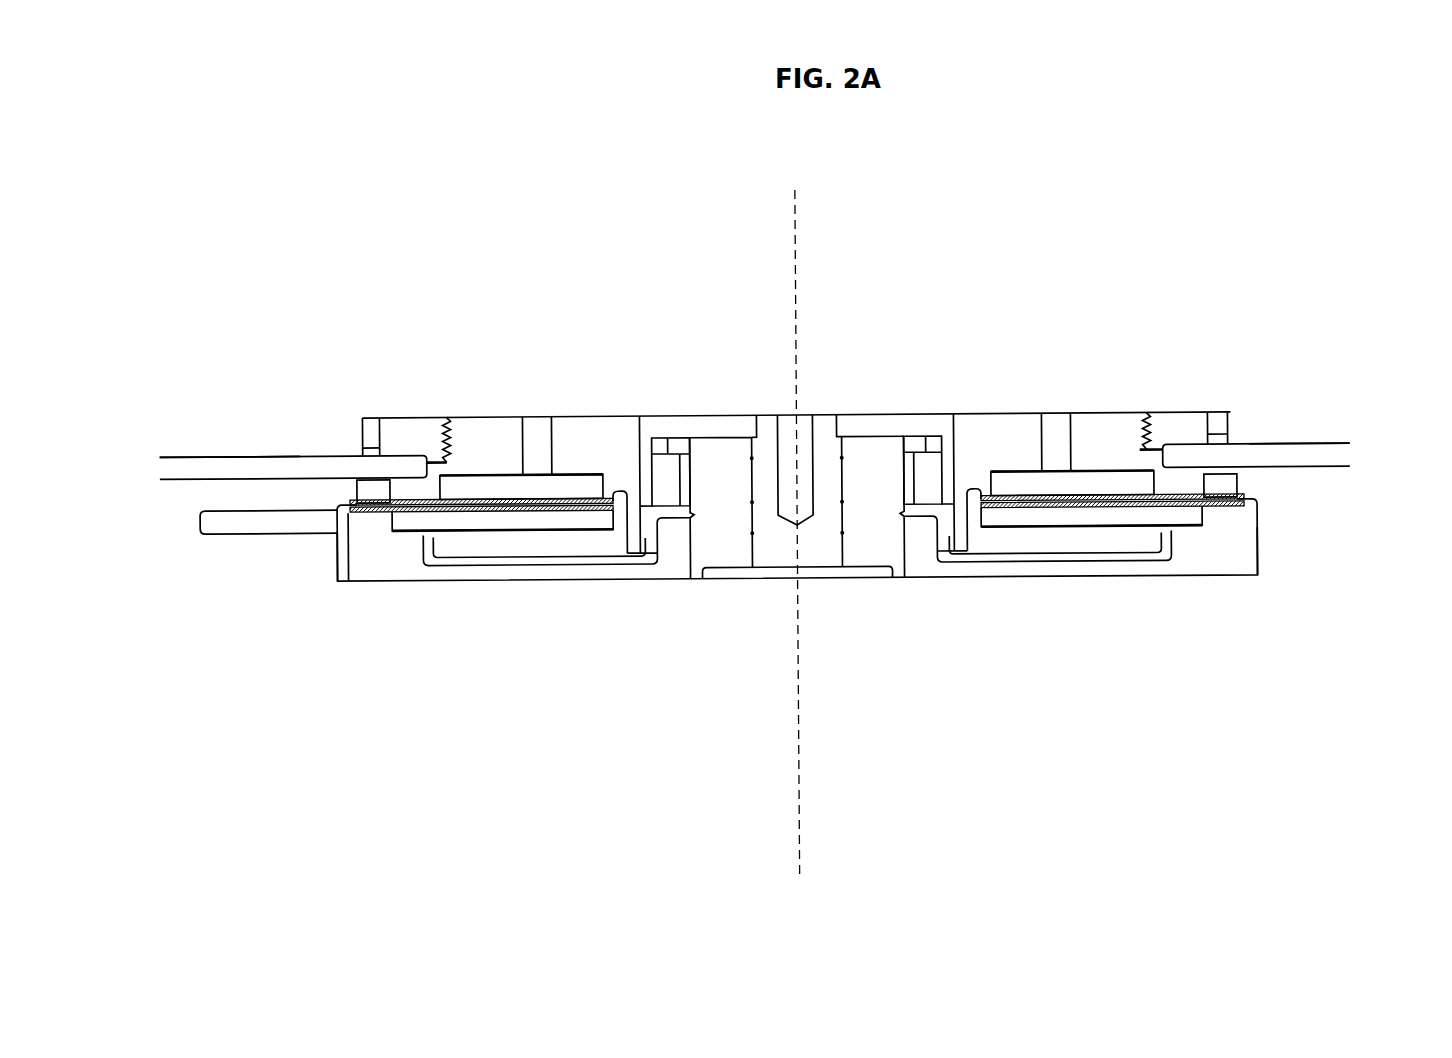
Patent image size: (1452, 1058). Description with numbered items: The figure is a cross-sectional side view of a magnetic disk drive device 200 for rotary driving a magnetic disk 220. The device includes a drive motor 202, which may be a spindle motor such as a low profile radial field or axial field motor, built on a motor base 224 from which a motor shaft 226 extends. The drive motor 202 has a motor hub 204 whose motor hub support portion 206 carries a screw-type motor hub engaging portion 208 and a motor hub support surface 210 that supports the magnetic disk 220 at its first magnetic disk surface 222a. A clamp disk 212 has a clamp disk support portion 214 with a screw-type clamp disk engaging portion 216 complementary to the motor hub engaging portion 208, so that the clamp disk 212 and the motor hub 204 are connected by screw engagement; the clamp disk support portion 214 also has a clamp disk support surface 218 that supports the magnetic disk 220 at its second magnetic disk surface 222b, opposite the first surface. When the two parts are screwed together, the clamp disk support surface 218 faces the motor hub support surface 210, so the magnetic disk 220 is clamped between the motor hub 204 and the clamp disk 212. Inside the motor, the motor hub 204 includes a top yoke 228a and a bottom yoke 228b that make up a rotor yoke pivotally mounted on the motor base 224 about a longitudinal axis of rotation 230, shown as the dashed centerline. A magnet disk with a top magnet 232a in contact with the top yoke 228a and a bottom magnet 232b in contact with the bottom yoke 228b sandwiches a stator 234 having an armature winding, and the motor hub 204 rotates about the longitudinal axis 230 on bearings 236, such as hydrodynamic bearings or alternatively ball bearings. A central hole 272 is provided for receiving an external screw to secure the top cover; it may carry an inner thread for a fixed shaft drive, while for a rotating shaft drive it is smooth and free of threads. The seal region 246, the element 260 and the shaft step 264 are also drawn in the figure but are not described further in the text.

The magnetic disk drive device 200 is at (1359, 184).
The drive motor 202 is at (1245, 595).
The motor hub 204 is at (1013, 412).
The motor hub support portion 206 is at (493, 420).
The motor hub engaging portion 208 is at (447, 420).
The motor hub support surface 210 is at (390, 478).
The clamp disk 212 is at (350, 390).
The clamp disk support portion 214 is at (363, 420).
The clamp disk engaging portion 216 is at (437, 420).
The clamp disk support surface 218 is at (390, 455).
The magnetic disk 220 is at (268, 458).
The first magnetic disk surface 222a is at (212, 477).
The second magnetic disk surface 222b is at (1317, 443).
The motor base 224 is at (773, 582).
The motor shaft 226 is at (810, 547).
The top yoke 228a is at (618, 415).
The bottom yoke 228b is at (670, 552).
The longitudinal axis of rotation 230 is at (800, 762).
The top magnet 232a is at (557, 483).
The bottom magnet 232b is at (520, 545).
The stator 234 is at (462, 515).
The bearings 236 is at (665, 487).
The seal 246 is at (363, 443).
The magnet 260 is at (427, 458).
The shaft step 264 is at (762, 418).
The hole 272 is at (786, 425).